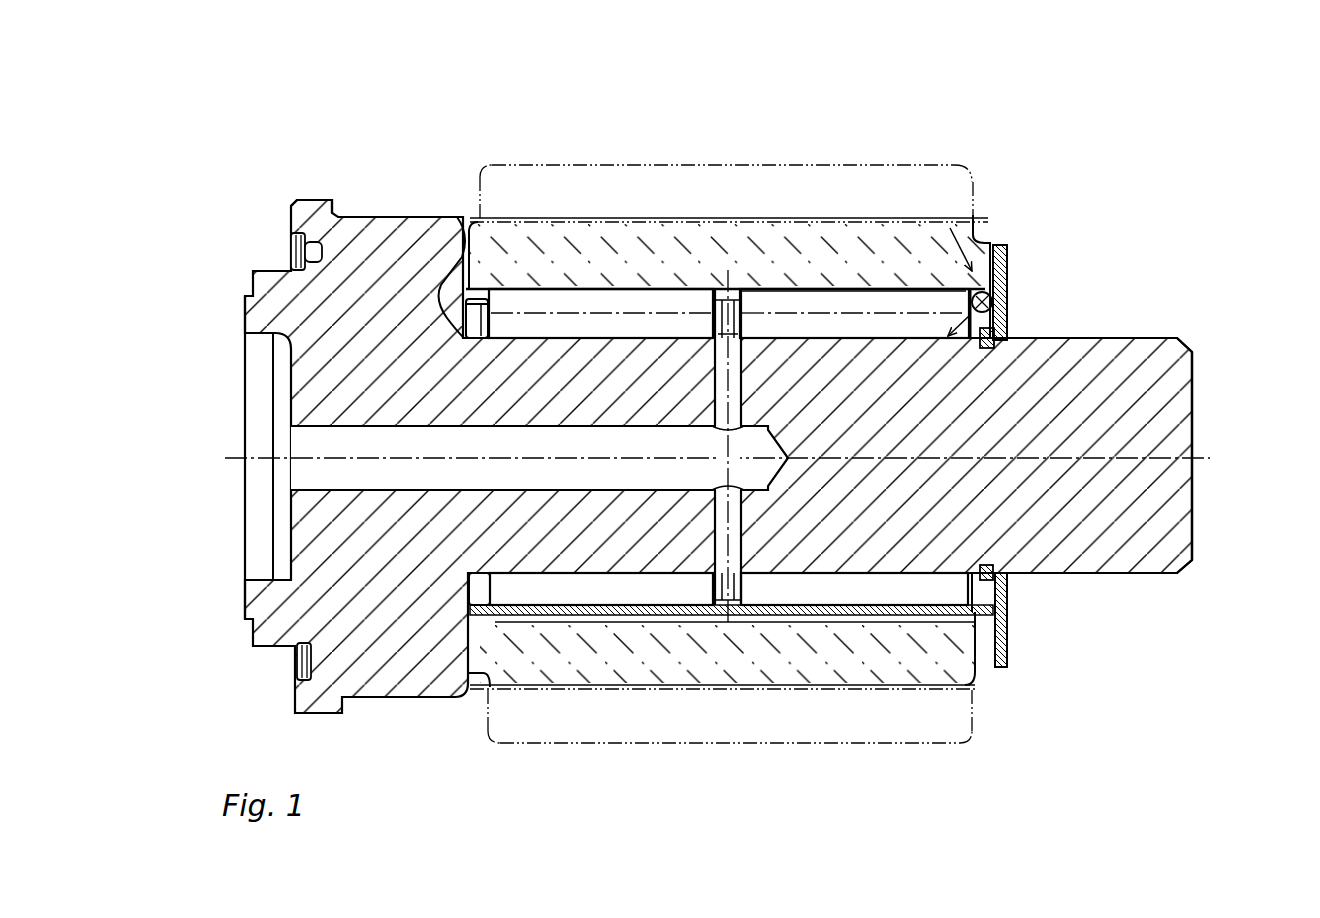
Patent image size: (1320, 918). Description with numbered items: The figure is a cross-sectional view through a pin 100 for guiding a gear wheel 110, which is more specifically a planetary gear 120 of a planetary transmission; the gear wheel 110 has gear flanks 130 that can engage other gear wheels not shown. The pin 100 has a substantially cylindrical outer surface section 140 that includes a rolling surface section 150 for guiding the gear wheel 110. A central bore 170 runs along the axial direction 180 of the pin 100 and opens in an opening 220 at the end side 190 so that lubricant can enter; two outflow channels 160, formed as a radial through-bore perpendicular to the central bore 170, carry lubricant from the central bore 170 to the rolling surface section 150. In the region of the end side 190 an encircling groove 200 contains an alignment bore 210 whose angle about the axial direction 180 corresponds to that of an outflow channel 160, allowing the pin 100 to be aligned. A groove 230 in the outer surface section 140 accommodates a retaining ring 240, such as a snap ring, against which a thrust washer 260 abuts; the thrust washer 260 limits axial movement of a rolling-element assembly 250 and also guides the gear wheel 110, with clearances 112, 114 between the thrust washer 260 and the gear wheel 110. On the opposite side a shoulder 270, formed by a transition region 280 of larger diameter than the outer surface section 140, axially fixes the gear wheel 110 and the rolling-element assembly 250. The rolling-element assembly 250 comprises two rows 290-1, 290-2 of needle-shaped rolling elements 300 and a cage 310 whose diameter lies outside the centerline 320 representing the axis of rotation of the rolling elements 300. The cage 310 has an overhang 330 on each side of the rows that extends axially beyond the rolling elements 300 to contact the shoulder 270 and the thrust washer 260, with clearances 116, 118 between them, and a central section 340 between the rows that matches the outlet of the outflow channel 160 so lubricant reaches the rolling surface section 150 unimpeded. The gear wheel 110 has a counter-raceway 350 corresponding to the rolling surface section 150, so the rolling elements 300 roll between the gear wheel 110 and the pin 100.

The pin 100 is at (1182, 214).
The gear wheel 110 is at (977, 236).
The planetary gear 120 is at (1002, 230).
The clearance 112 is at (991, 240).
The clearance 114 is at (478, 298).
The clearance 116 is at (447, 222).
The clearance 118 is at (966, 294).
The gear flanks 130 is at (963, 188).
The outer surface section 140 is at (1118, 336).
The rolling surface section 150 is at (1005, 296).
The outflow channels 160 is at (713, 398).
The central bore 170 is at (453, 452).
The axial direction 180 is at (1195, 452).
The end side 190 is at (245, 318).
The encircling groove 200 is at (291, 242).
The alignment bore 210 is at (324, 232).
The opening 220 is at (250, 415).
The groove 230 is at (1000, 345).
The retaining ring 240 is at (1010, 320).
The rolling-element assembly 250 is at (1008, 247).
The thrust washer 260 is at (1008, 272).
The shoulder 270 is at (473, 215).
The transition region 280 is at (414, 216).
The first row of rolling elements 290-1 is at (625, 300).
The second row of rolling elements 290-2 is at (857, 297).
The rolling elements 300 is at (538, 300).
The cage 310 is at (1000, 612).
The centerline 320 is at (807, 307).
The overhang 330 is at (486, 298).
The central section 340 is at (733, 303).
The counter-raceway 350 is at (690, 300).